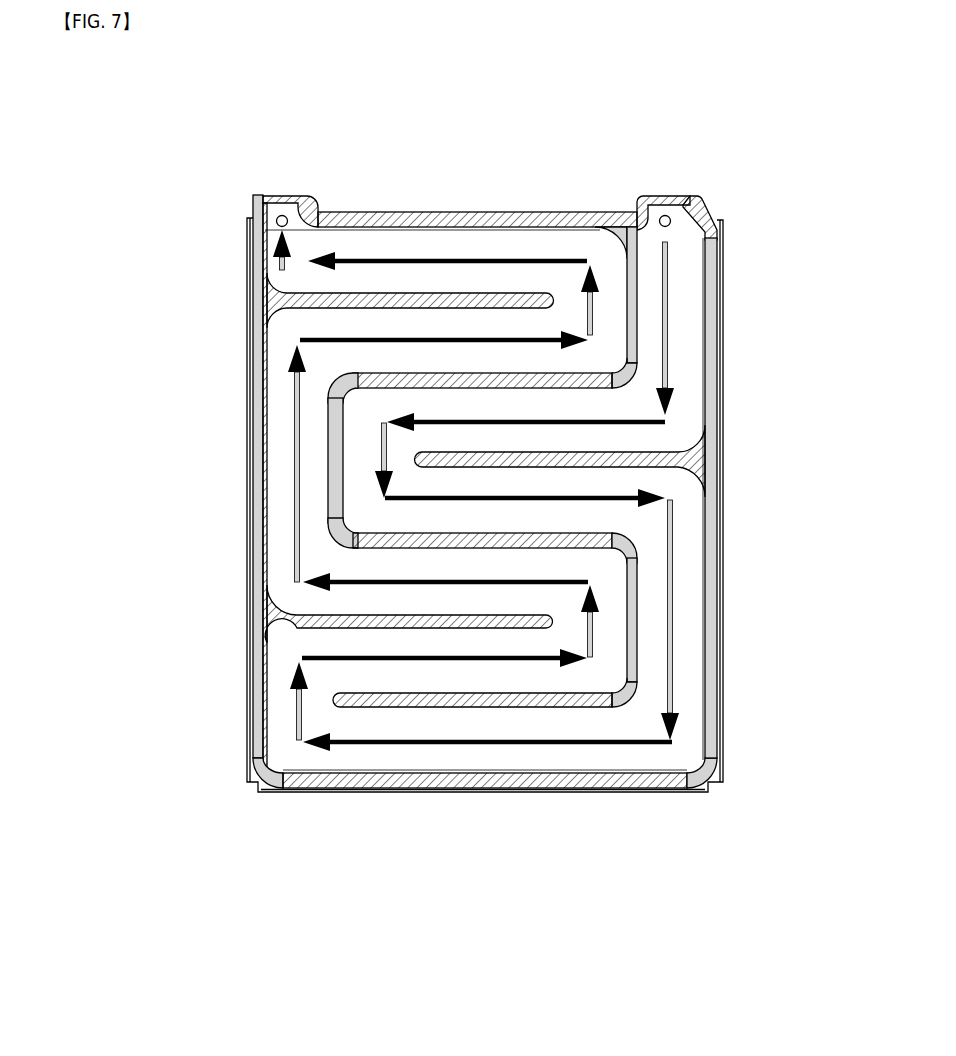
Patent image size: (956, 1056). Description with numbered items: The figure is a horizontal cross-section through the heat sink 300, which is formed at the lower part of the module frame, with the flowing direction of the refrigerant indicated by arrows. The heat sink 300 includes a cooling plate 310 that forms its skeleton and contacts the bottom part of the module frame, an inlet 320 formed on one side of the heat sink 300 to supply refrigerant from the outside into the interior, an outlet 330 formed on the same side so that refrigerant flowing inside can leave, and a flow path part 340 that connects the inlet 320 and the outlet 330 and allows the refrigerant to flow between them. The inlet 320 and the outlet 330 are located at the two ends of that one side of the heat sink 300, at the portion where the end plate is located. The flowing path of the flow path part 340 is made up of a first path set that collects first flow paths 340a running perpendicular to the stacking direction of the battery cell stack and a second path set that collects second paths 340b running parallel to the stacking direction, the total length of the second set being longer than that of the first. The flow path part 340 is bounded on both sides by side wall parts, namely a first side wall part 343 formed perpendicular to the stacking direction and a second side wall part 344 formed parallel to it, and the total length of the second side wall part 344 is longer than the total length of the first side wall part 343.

The heat sink 300 is at (532, 430).
The cooling plate 310 is at (707, 459).
The inlet 320 is at (666, 197).
The outlet 330 is at (284, 197).
The flow path part 340 is at (690, 333).
The first side wall part 343 is at (712, 573).
The second side wall part 344 is at (514, 212).
The first flow path 340a is at (476, 556).
The second path 340b is at (310, 914).